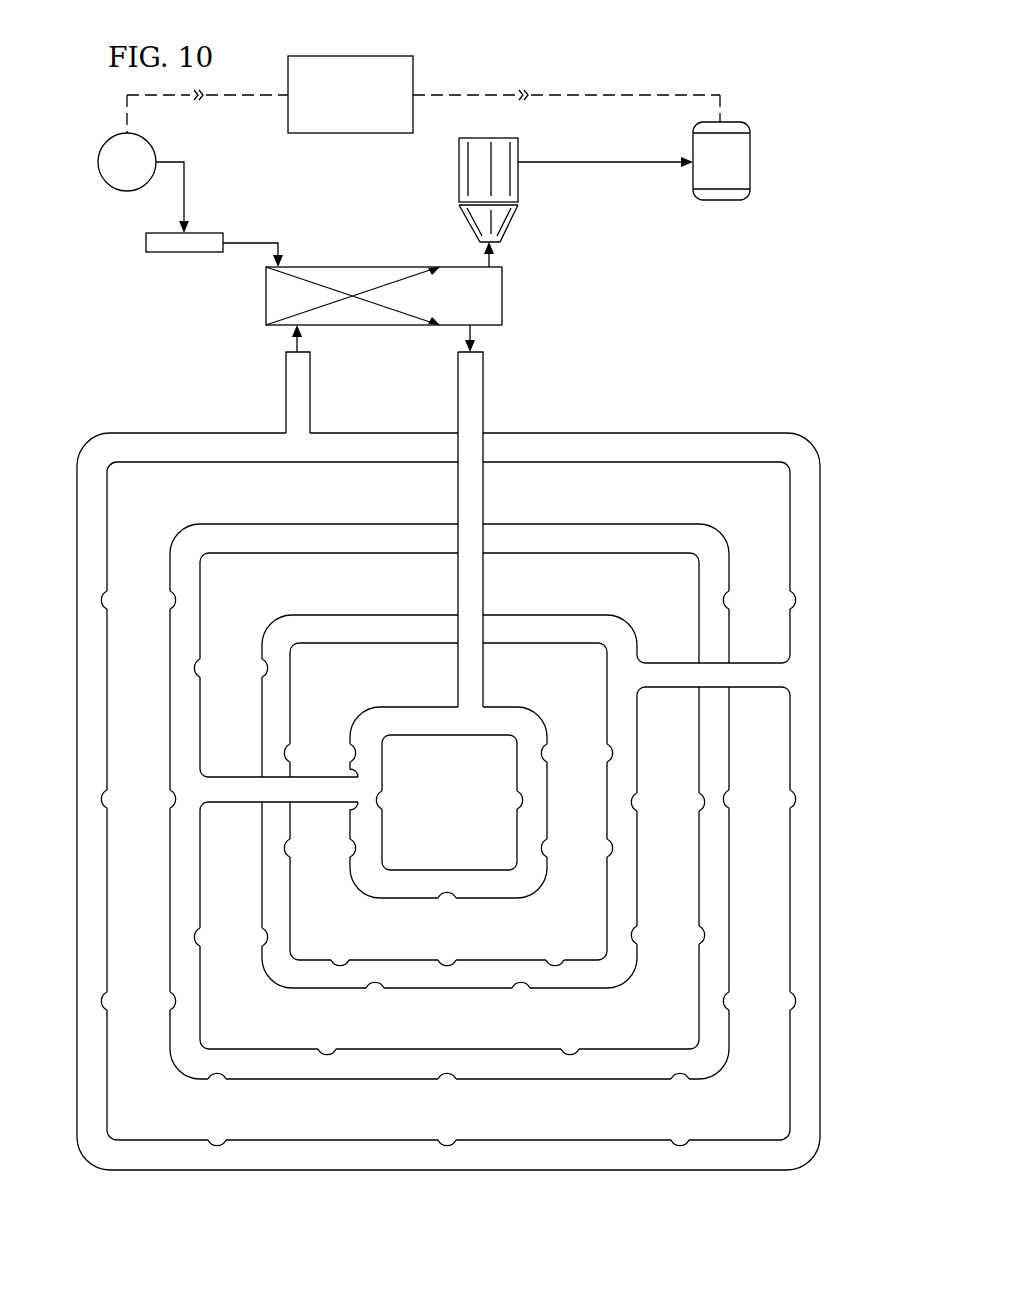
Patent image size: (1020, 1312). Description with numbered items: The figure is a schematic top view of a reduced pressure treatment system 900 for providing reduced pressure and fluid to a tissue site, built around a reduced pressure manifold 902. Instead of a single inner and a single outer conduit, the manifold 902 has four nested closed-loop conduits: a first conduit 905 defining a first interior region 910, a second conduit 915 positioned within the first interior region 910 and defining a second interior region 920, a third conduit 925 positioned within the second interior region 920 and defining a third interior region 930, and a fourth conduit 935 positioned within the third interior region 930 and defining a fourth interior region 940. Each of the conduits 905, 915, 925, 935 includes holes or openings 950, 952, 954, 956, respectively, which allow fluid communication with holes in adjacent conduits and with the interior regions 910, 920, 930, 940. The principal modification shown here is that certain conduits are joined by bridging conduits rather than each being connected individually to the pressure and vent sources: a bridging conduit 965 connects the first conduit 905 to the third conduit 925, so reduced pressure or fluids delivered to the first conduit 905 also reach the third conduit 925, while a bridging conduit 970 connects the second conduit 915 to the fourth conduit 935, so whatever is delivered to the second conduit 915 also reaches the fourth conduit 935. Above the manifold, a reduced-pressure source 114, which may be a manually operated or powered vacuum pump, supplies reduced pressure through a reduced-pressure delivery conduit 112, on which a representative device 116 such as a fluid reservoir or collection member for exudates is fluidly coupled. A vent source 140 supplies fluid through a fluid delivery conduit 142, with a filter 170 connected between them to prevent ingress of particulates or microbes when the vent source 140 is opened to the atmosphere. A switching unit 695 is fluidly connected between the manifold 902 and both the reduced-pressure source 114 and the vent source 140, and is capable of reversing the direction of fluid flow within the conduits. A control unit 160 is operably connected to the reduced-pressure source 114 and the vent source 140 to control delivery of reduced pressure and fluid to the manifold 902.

The reduced pressure treatment system 900 is at (795, 66).
The reduced pressure manifold 902 is at (688, 324).
The first conduit 905 is at (172, 433).
The first interior region 910 is at (430, 1117).
The second conduit 915 is at (272, 524).
The second interior region 920 is at (430, 1030).
The third conduit 925 is at (350, 615).
The third interior region 930 is at (430, 935).
The fourth conduit 935 is at (484, 394).
The fourth interior region 940 is at (430, 810).
The openings 950 is at (112, 601).
The openings 952 is at (166, 600).
The openings 954 is at (258, 668).
The openings 956 is at (352, 753).
The bridging conduit 965 is at (748, 690).
The bridging conduit 970 is at (240, 803).
The vent source 140 is at (108, 142).
The fluid delivery conduit 142 is at (180, 202).
The control unit 160 is at (332, 107).
The filter 170 is at (176, 253).
The switching unit 695 is at (308, 267).
The reduced-pressure delivery conduit 112 is at (597, 162).
The reduced-pressure source 114 is at (752, 152).
The representative device 116 is at (459, 170).